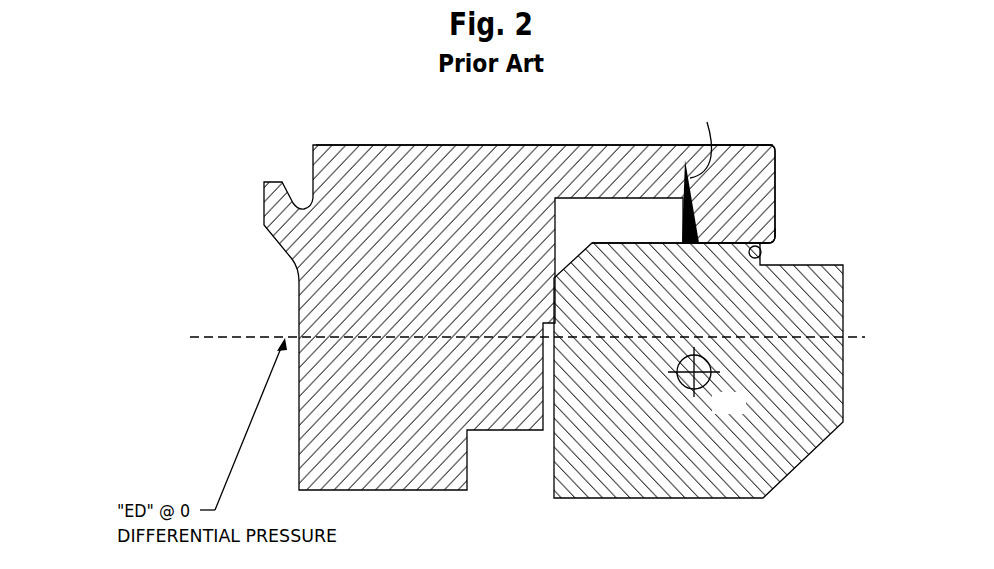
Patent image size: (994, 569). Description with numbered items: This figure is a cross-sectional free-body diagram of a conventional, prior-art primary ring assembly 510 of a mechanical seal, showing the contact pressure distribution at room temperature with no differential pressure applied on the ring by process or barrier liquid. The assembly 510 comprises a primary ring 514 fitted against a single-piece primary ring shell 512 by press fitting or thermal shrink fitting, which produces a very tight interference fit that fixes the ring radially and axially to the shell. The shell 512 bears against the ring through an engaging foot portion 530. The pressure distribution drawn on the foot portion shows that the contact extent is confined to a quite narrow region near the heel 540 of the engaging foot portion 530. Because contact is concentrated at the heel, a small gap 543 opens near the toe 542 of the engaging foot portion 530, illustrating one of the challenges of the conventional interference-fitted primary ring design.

The primary ring assembly 510 is at (549, 292).
The primary ring shell 512 is at (529, 145).
The engaging foot portion 530 is at (759, 168).
The gap 543 is at (777, 238).
The primary ring 514 is at (706, 346).
The toe 542 is at (761, 256).
The heel 540 is at (686, 260).